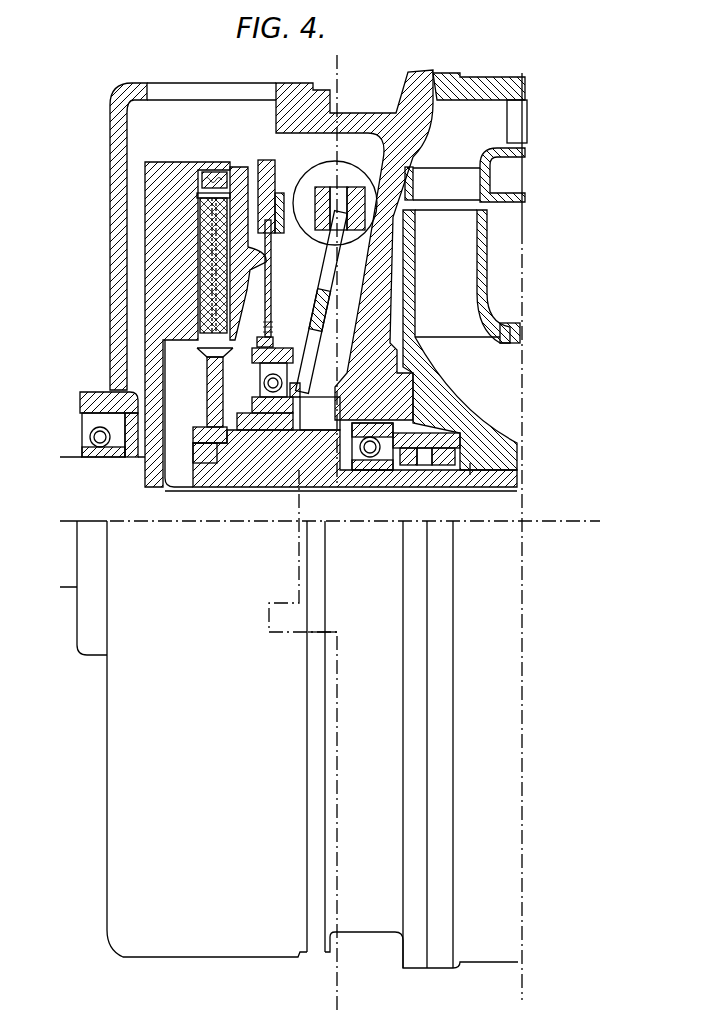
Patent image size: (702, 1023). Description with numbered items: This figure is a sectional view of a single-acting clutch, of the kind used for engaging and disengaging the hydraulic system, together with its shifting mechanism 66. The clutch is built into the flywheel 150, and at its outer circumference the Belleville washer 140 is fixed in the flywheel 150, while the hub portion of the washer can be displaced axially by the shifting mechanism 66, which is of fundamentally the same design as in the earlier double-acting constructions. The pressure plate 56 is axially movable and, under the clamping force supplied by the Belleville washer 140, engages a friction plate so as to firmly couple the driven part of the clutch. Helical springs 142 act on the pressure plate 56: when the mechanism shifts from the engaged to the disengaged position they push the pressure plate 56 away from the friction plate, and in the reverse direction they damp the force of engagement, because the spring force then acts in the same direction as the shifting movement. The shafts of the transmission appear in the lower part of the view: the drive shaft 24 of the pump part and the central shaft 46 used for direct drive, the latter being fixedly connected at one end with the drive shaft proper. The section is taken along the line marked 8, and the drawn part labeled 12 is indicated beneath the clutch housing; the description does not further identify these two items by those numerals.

The section line 8- 8 is at (385, 60).
The hub 12 is at (232, 488).
The drive shaft 24 is at (507, 474).
The central shaft 46 is at (503, 511).
The pressure plate 56 is at (238, 183).
The shifting mechanism 66 is at (250, 403).
The Belleville washer 140 is at (272, 292).
The helical springs 142 is at (207, 172).
The flywheel 150 is at (163, 173).